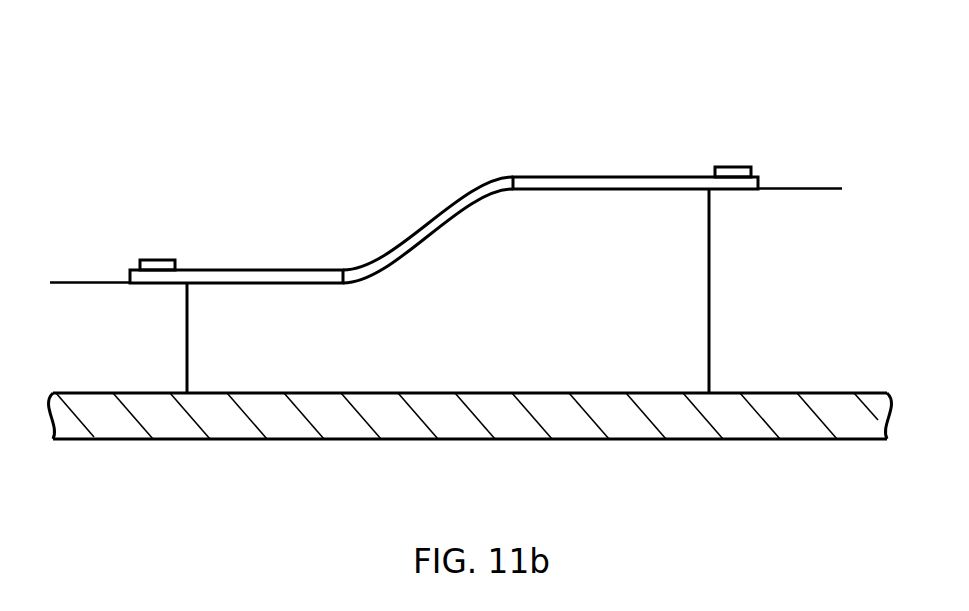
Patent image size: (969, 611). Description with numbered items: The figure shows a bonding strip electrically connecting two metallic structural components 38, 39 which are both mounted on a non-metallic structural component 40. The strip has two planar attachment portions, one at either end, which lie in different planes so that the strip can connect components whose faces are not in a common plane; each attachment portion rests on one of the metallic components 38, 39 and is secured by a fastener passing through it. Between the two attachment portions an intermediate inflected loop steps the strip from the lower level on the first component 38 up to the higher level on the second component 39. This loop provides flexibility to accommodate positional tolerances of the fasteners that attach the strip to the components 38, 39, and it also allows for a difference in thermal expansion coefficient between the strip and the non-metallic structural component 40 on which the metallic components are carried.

The metallic structural component 38 is at (137, 338).
The metallic structural component 39 is at (748, 291).
The non-metallic structural component 40 is at (450, 440).